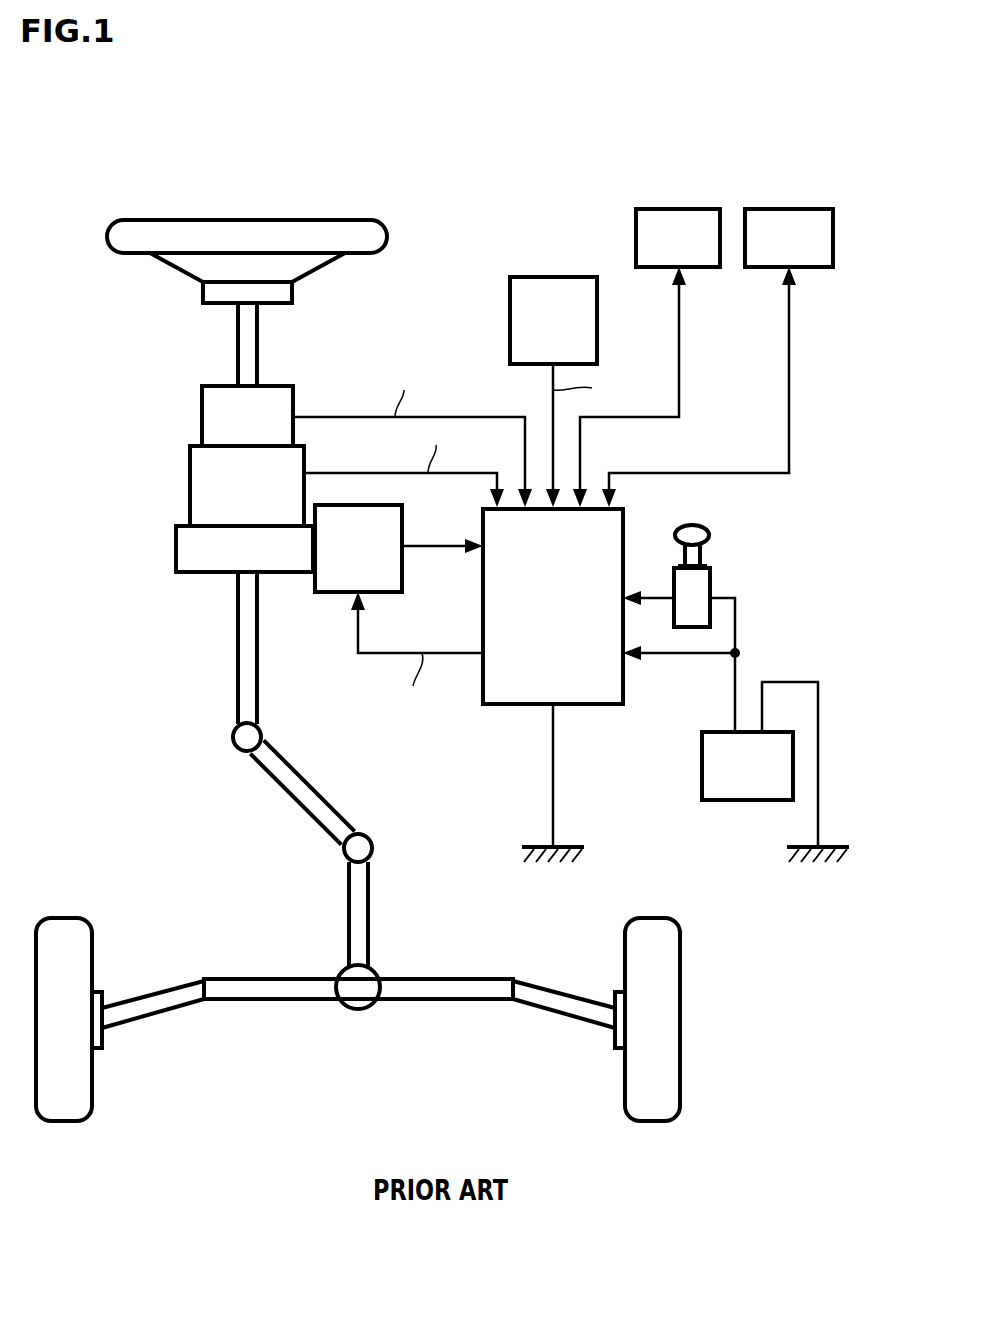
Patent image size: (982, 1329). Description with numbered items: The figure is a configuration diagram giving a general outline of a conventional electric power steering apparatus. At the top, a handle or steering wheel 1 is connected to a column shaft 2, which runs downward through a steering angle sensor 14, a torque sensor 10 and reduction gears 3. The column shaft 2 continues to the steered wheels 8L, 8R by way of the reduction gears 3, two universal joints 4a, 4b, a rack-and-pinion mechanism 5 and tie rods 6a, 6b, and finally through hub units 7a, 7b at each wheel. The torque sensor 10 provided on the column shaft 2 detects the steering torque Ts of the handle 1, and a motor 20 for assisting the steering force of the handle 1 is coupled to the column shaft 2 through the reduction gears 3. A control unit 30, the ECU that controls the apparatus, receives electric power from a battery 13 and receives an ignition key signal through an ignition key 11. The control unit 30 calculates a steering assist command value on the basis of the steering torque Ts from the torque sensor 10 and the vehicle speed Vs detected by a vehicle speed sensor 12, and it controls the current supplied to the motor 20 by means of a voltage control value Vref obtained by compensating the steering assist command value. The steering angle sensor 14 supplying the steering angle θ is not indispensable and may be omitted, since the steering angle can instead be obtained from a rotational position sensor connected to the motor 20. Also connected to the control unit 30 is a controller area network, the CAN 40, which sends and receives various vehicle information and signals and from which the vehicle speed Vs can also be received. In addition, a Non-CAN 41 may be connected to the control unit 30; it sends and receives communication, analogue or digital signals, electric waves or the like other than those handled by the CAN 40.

The handle (steering wheel) 1 is at (388, 238).
The column shaft (steering shaft) 2 is at (238, 350).
The steering angle sensor 14 is at (202, 413).
The torque sensor 10 is at (190, 476).
The reduction gears 3 is at (176, 555).
The motor 20 is at (402, 512).
The control unit (ECU) 30 is at (623, 514).
The vehicle speed sensor 12 is at (597, 292).
The Non-CAN 41 is at (708, 209).
The controller area network (CAN) 40 is at (818, 209).
The ignition key 11 is at (710, 534).
The battery 13 is at (702, 757).
The universal joint 4a is at (233, 743).
The universal joint 4b is at (344, 854).
The rack-and-pinion mechanism 5 is at (375, 970).
The tie rod 6a is at (140, 992).
The tie rod 6b is at (545, 992).
The hub unit 7a is at (104, 1045).
The hub unit 7b is at (614, 1045).
The steered wheel 8L is at (92, 1108).
The steered wheel 8R is at (625, 1108).